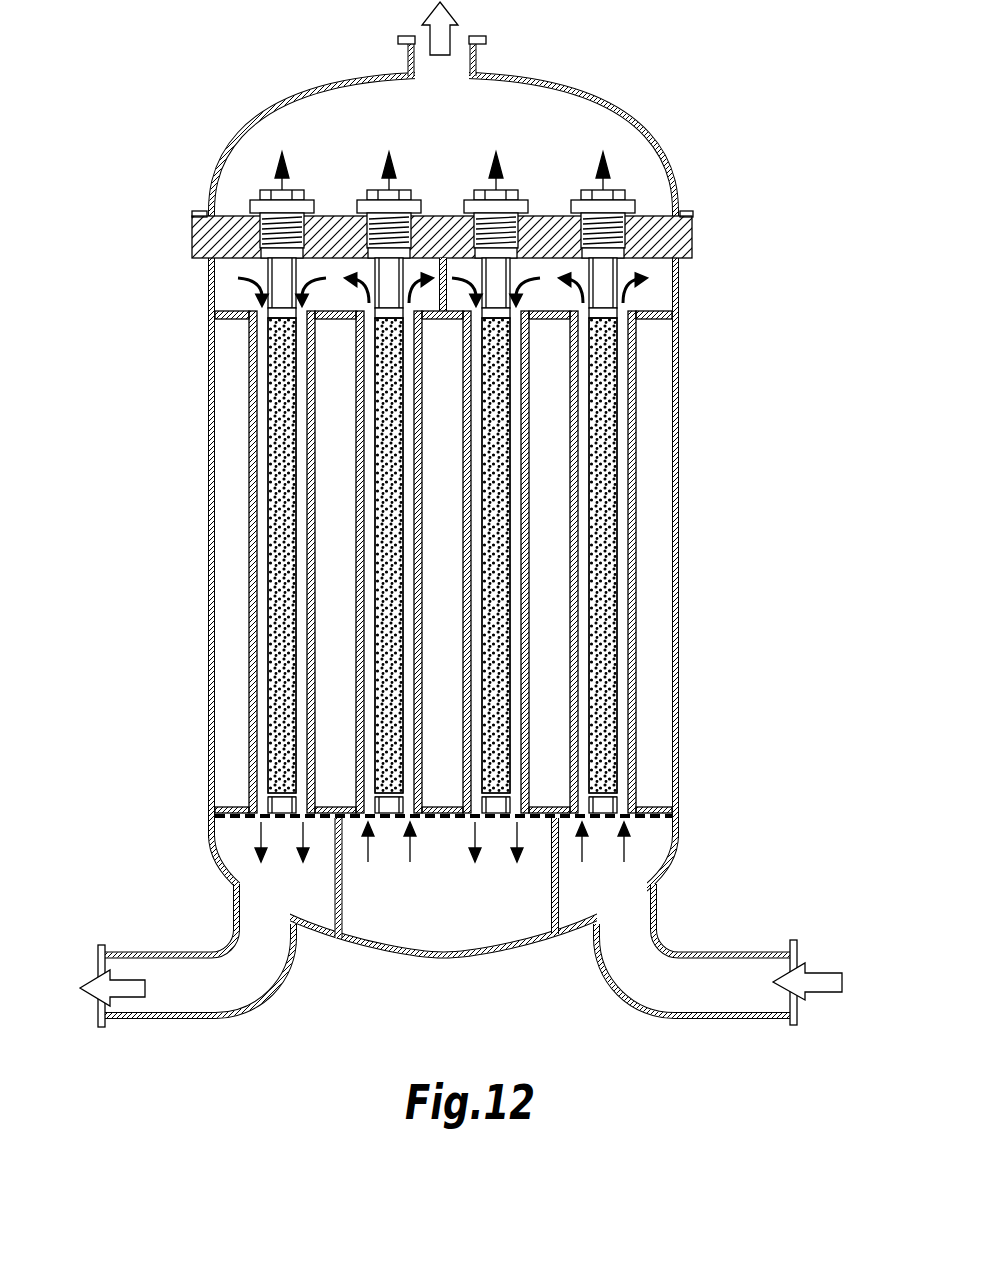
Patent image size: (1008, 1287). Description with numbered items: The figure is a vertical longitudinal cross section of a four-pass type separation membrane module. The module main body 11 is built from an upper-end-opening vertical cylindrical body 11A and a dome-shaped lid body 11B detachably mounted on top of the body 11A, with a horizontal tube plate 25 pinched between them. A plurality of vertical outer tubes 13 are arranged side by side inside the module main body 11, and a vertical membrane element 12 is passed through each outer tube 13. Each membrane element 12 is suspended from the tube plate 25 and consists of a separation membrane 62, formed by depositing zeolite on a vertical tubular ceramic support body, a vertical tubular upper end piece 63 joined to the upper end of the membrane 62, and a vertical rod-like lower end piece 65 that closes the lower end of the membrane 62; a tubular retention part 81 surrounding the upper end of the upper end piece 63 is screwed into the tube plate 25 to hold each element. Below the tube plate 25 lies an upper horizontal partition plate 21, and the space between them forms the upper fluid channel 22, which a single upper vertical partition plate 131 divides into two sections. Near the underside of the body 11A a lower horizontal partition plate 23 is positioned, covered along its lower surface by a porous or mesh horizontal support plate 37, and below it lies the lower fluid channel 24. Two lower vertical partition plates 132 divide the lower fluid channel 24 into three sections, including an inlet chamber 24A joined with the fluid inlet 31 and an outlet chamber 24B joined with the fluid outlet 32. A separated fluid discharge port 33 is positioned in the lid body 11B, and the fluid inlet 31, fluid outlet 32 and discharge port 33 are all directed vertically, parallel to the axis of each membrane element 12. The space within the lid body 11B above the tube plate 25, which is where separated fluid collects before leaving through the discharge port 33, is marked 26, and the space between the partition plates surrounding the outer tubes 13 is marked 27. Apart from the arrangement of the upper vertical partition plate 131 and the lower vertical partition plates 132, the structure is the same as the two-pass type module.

The module main body 11 is at (452, 490).
The vertical cylindrical body 11A is at (209, 553).
The dome-shaped lid body 11B is at (303, 92).
The membrane element 12 is at (620, 706).
The outer tube 13 is at (640, 540).
The upper horizontal partition plate 21 is at (657, 316).
The upper fluid channel 22 is at (212, 290).
The lower horizontal partition plate 23 is at (240, 806).
The lower fluid channel 24 is at (217, 853).
The inlet chamber 24A is at (578, 933).
The outlet chamber 24B is at (318, 940).
The tube plate 25 is at (538, 216).
The product space 26 is at (458, 117).
The heat medium space 27 is at (468, 575).
The fluid inlet 31 is at (740, 1018).
The fluid outlet 32 is at (165, 1018).
The separated fluid discharge port 33 is at (478, 55).
The horizontal support plate 37 is at (660, 820).
The separation membrane 62 is at (612, 595).
The upper end piece 63 is at (620, 262).
The lower end piece 65 is at (630, 806).
The retention part 81 is at (632, 196).
The upper vertical partition plate 131 is at (447, 280).
The lower vertical partition plate 132 is at (345, 895).